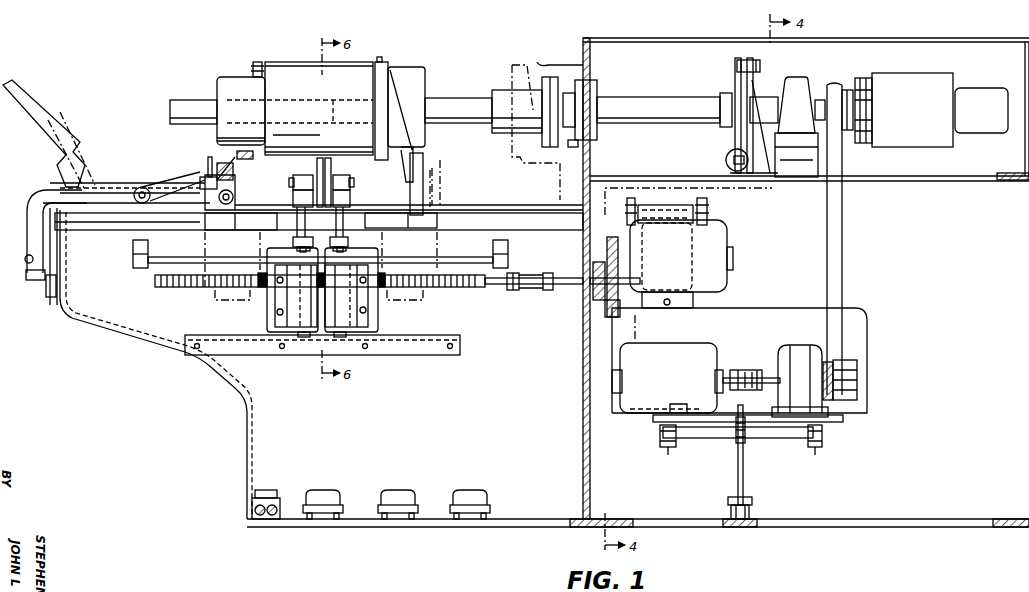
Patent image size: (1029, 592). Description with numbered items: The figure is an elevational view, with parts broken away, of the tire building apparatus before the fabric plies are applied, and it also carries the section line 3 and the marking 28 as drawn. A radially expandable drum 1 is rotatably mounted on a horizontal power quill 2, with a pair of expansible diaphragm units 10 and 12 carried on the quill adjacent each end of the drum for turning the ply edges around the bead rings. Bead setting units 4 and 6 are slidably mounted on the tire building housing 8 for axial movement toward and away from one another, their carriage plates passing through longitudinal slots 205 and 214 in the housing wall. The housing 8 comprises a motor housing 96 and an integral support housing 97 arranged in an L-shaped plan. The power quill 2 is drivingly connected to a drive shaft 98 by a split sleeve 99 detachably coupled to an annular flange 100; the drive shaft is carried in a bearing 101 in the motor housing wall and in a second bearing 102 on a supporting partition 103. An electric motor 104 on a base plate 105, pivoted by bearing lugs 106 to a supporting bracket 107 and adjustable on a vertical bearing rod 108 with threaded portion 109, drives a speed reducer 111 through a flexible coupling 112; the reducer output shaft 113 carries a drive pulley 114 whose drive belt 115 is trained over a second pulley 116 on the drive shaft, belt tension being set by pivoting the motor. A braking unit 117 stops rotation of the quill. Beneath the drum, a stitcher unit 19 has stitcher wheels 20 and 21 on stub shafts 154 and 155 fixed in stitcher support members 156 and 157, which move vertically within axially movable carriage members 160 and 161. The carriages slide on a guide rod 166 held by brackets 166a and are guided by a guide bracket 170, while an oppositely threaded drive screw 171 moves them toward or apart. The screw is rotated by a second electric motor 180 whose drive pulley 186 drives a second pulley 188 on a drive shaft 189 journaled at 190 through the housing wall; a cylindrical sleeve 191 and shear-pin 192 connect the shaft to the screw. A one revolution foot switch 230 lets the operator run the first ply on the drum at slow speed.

The radially expandable drum 1 is at (364, 60).
The power quill 2 is at (447, 97).
The section line 3- 3 is at (173, 112).
The bead setting unit 4 is at (256, 62).
The bead setting unit 6 is at (392, 65).
The tire building housing 8 is at (243, 401).
The expansible diaphragm unit 10 is at (226, 73).
The expansible diaphragm unit 12 is at (418, 74).
The stitcher unit 19 is at (371, 336).
The stitcher wheel 20 is at (317, 163).
The stitcher wheel 21 is at (331, 163).
The drive motor 28 is at (917, 73).
The motor housing 96 is at (852, 38).
The support housing 97 is at (249, 481).
The drive shaft 98 is at (657, 103).
The split sleeve 99 is at (501, 90).
The annular flange 100 is at (551, 76).
The bearing 101 is at (598, 88).
The second bearing 102 is at (800, 80).
The supporting partition 103 is at (938, 183).
The electric motor 104 is at (686, 352).
The base plate 105 is at (838, 423).
The bearing lugs 106 is at (658, 432).
The supporting bracket 107 is at (706, 438).
The bearing rod 108 is at (746, 488).
The threaded portion 109 is at (746, 438).
The speed reducer 111 is at (803, 352).
The flexible coupling 112 is at (749, 368).
The output shaft 113 is at (857, 380).
The drive pulley 114 is at (845, 366).
The drive belt 115 is at (843, 287).
The second pulley 116 is at (836, 85).
The braking unit 117 is at (722, 80).
The stub shaft 154 is at (289, 182).
The stub shaft 155 is at (354, 182).
The stitcher support member 156 is at (293, 198).
The stitcher support member 157 is at (352, 198).
The carriage member 160 is at (267, 318).
The carriage member 161 is at (378, 317).
The guide rod 166 is at (458, 253).
The brackets 166a is at (133, 250).
The guide bracket 170 is at (435, 356).
The drive screw 171 is at (462, 288).
The second electric motor 180 is at (728, 238).
The drive pulley 186 is at (611, 242).
The second pulley 188 is at (605, 307).
The drive shaft 189 is at (563, 278).
The journal 190 is at (593, 296).
The cylindrical sleeve 191 is at (526, 289).
The shear-pin 192 is at (545, 291).
The longitudinally extending slot 205 is at (178, 222).
The longitudinal slot 214 is at (474, 216).
The one revolution foot switch 230 is at (272, 490).